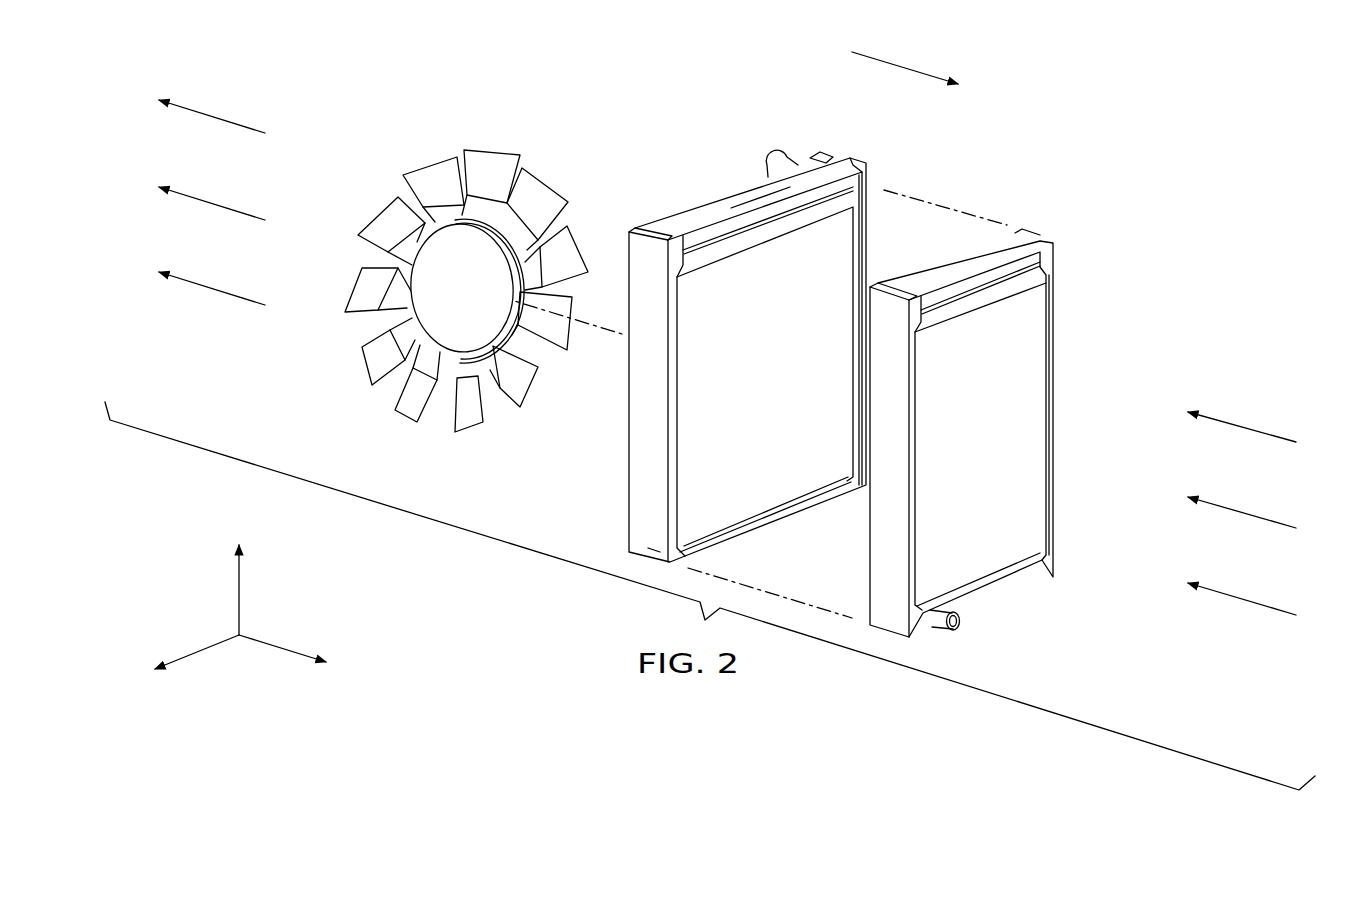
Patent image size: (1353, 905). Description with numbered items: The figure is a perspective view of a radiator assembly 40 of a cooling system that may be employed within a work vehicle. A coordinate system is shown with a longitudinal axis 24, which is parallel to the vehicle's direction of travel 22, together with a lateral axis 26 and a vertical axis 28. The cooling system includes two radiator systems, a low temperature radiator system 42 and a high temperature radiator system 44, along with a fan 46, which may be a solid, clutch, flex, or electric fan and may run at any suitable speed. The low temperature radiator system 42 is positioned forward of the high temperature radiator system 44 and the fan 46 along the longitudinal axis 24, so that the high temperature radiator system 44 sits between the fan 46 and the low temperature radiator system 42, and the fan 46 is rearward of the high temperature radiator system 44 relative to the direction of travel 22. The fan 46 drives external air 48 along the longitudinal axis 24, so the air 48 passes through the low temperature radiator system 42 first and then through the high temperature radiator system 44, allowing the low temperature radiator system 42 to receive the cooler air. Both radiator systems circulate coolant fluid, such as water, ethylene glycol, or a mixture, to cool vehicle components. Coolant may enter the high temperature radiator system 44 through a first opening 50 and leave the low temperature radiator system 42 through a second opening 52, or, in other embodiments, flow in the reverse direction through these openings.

The direction of travel 22 is at (902, 63).
The longitudinal axis 24 is at (277, 648).
The lateral axis 26 is at (182, 657).
The vertical axis 28 is at (239, 593).
The radiator assembly 40 is at (1102, 101).
The low temperature radiator system 42 is at (1033, 234).
The high temperature radiator system 44 is at (847, 157).
The fan 46 is at (433, 170).
The air 48 is at (217, 120).
The first opening 50 is at (777, 155).
The second opening 52 is at (961, 620).